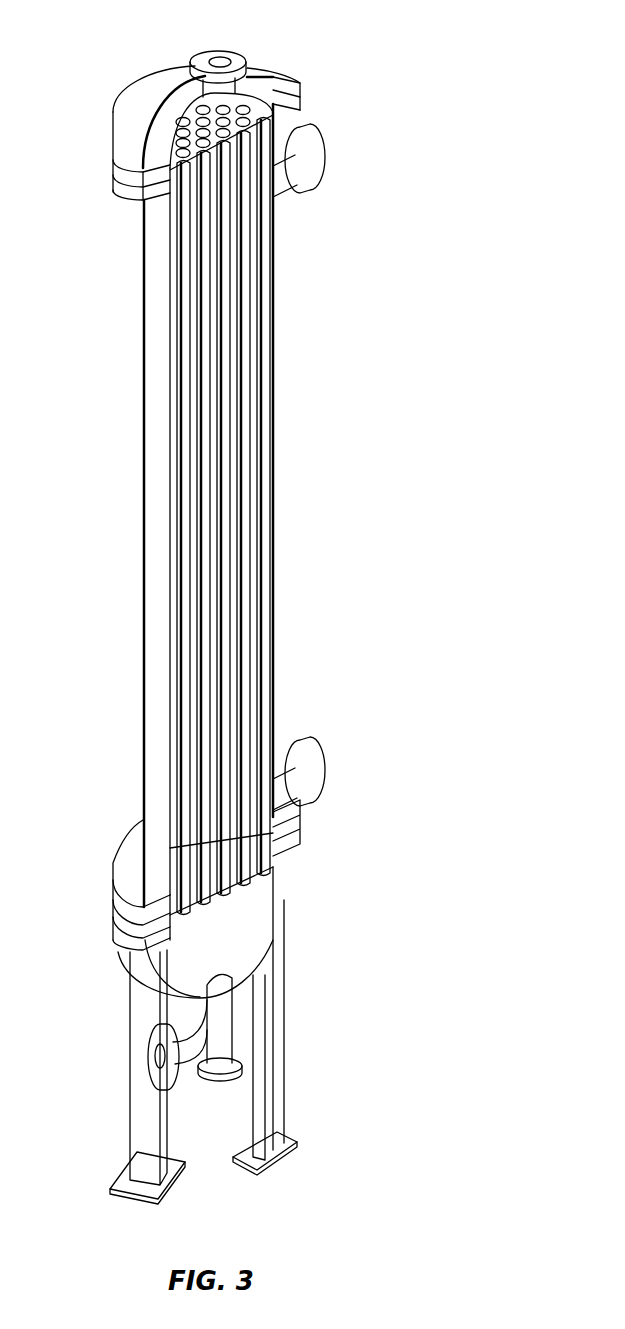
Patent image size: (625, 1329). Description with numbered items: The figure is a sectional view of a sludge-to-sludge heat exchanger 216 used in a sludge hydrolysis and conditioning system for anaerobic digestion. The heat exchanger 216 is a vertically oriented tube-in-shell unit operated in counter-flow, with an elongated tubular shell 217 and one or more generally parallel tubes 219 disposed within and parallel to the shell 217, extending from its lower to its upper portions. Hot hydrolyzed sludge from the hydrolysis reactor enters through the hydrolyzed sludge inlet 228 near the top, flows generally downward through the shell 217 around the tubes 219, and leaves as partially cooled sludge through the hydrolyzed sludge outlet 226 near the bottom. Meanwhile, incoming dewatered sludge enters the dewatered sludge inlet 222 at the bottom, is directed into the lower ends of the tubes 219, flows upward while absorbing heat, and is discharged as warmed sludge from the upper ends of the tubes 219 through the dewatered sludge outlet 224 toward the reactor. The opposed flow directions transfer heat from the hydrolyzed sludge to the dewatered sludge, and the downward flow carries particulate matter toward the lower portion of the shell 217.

The heat exchanger 216 is at (362, 97).
The shell 217 is at (152, 462).
The tubes 219 is at (227, 542).
The dewatered sludge inlet 222 is at (163, 1050).
The dewatered sludge outlet 224 is at (220, 63).
The hydrolyzed sludge outlet 226 is at (290, 788).
The hydrolyzed sludge inlet 228 is at (288, 177).